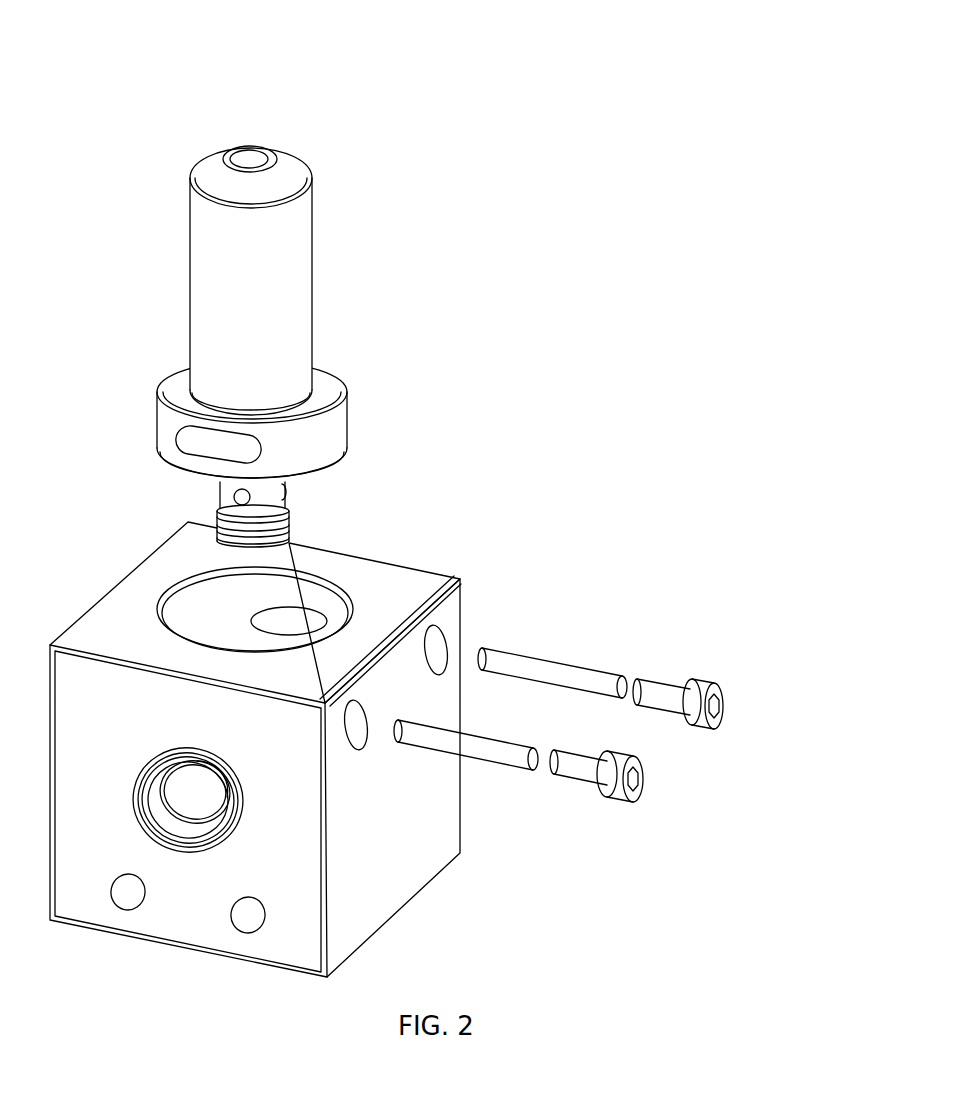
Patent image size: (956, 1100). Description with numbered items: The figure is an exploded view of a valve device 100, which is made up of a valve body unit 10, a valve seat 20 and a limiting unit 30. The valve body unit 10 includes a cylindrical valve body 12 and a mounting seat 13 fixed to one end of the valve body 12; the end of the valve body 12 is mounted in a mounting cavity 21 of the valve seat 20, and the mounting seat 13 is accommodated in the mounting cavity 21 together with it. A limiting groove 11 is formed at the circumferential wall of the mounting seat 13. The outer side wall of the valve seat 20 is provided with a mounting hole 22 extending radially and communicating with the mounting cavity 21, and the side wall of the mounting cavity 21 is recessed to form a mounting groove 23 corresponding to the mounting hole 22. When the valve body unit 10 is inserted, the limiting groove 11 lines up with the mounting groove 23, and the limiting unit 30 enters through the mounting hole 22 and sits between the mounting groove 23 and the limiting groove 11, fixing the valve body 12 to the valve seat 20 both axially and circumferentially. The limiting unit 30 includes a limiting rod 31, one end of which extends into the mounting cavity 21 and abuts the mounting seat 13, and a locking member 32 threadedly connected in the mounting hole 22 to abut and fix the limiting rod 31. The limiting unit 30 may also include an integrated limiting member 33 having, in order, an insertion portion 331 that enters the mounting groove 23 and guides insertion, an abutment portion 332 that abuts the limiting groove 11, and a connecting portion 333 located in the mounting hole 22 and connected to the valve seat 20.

The valve device 100 is at (244, 75).
The valve body unit 10 is at (342, 302).
The limiting groove 11 is at (193, 443).
The valve body 12 is at (300, 234).
The mounting seat 13 is at (323, 435).
The valve seat 20 is at (407, 583).
The mounting cavity 21 is at (292, 590).
The mounting hole 22 is at (440, 645).
The mounting groove 23 is at (308, 626).
The limiting unit 30 is at (737, 689).
The limiting rod 31 is at (558, 670).
The locking member 32 is at (657, 685).
The limiting member 33 is at (517, 663).
The insertion portion 331 is at (400, 732).
The abutment portion 332 is at (413, 727).
The connecting portion 333 is at (515, 752).